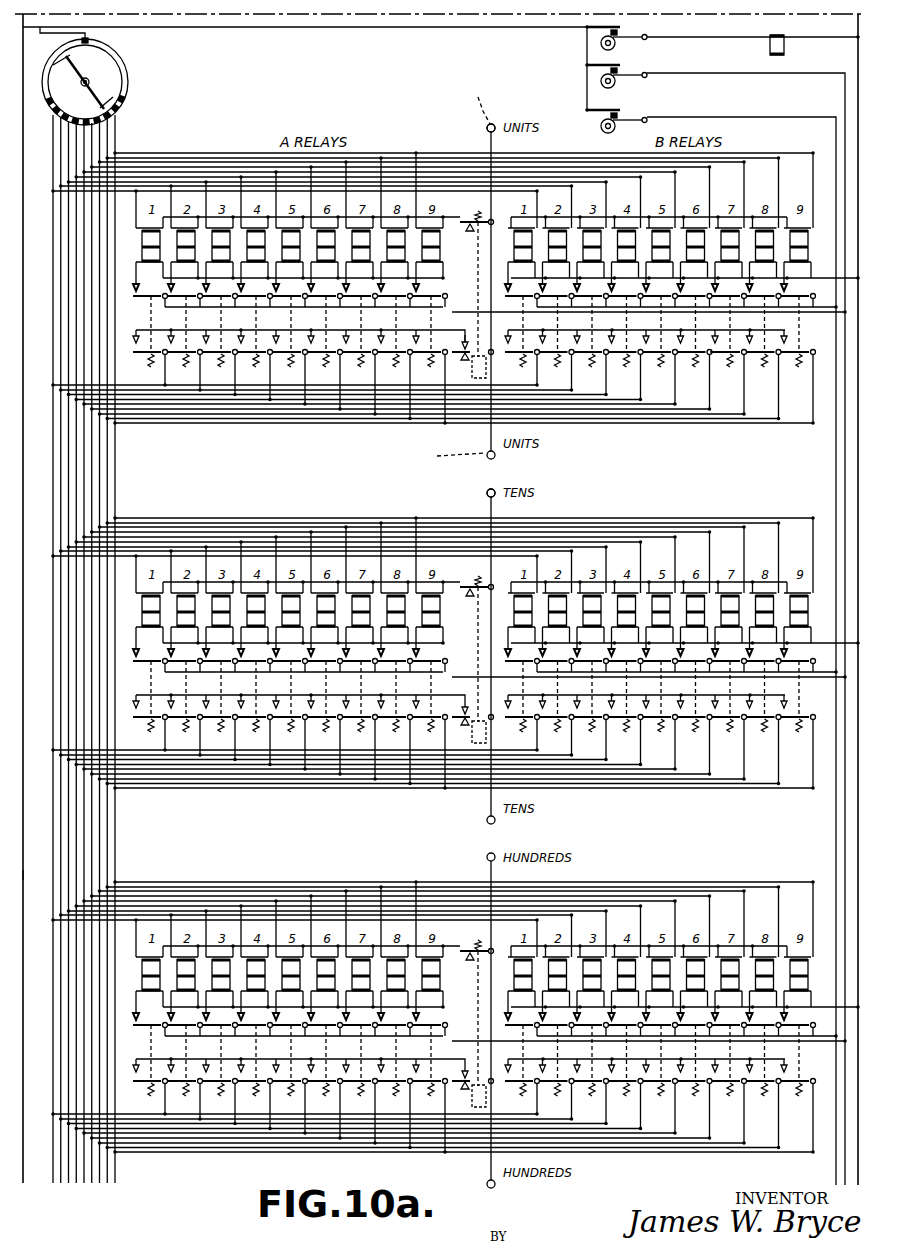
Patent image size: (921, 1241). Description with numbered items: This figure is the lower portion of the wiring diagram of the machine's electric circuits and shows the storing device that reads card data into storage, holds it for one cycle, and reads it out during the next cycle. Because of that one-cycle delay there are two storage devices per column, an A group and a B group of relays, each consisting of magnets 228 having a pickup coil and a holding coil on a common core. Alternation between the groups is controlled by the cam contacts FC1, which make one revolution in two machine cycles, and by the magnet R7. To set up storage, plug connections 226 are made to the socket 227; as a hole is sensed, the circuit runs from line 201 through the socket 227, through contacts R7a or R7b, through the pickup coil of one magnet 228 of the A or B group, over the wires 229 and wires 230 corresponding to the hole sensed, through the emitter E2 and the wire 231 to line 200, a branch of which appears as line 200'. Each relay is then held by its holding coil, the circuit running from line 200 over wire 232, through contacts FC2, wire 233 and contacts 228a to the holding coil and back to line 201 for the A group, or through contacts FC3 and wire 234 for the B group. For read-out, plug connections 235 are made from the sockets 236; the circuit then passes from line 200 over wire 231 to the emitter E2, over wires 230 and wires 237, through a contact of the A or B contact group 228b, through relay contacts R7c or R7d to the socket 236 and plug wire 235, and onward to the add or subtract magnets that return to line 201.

The line 200 is at (39, 598).
The line 200' is at (90, 866).
The line 201 is at (845, 828).
The plug connections 226 is at (476, 101).
The socket 227 is at (487, 127).
The magnets of the A and B groups of relays 228 is at (528, 981).
The contacts 228a is at (650, 1025).
The contact group 228b is at (672, 1083).
The wires 229 is at (220, 922).
The wires 230 is at (50, 462).
The wire 231 is at (68, 34).
The wire 232 is at (305, 42).
The wire 233 is at (770, 73).
The wire 234 is at (772, 117).
The plug connections 235 is at (455, 453).
The sockets 236 is at (487, 458).
The wires 237 is at (200, 1168).
The emitter E2 is at (118, 73).
The magnet R7 is at (487, 1097).
The contacts R7a is at (461, 221).
The contacts R7b is at (431, 260).
The relay contacts R7c is at (470, 331).
The relay contacts R7d is at (453, 358).
The cam contacts FC1 is at (625, 30).
The contacts FC2 is at (627, 70).
The contacts FC3 is at (627, 110).